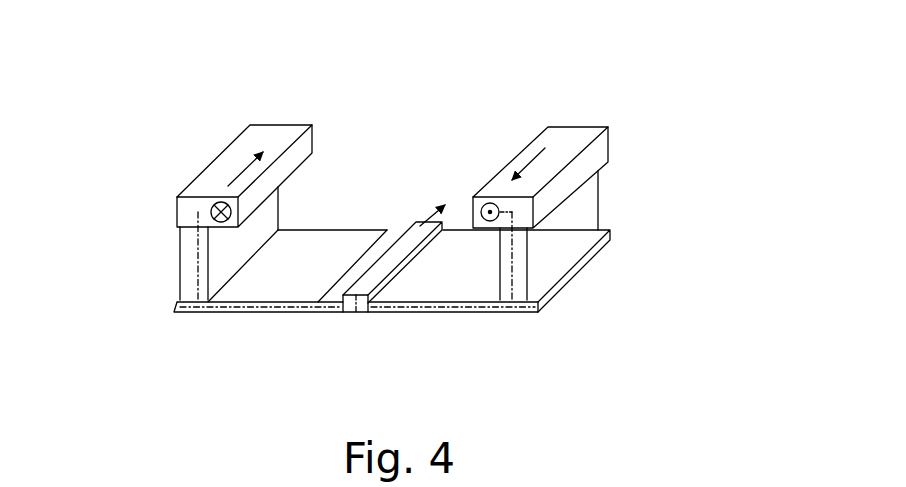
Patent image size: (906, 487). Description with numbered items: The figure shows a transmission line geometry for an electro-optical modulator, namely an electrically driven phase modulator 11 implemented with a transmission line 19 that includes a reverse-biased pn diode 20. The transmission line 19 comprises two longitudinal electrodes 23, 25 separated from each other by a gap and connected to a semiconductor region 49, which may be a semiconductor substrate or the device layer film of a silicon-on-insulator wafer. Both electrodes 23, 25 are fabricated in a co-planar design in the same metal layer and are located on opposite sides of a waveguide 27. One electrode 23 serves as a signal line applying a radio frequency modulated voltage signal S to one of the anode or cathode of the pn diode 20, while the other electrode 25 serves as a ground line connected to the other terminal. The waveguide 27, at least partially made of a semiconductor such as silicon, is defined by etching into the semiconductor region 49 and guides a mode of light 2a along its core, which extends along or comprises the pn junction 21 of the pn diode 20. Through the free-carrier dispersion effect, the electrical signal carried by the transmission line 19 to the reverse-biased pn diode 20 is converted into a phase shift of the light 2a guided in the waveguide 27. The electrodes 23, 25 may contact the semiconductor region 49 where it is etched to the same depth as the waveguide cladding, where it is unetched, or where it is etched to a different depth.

The electrically driven phase modulator 11 is at (155, 160).
The electrode 23 is at (233, 106).
The electrode 25 is at (626, 132).
The semiconductor region 49 is at (289, 298).
The waveguide 27 is at (457, 221).
The pn diode 20 is at (343, 319).
The pn junction 21 is at (365, 319).
The light 2a is at (430, 216).
The transmission line 19 is at (407, 124).